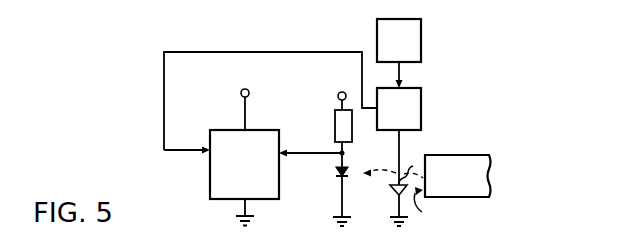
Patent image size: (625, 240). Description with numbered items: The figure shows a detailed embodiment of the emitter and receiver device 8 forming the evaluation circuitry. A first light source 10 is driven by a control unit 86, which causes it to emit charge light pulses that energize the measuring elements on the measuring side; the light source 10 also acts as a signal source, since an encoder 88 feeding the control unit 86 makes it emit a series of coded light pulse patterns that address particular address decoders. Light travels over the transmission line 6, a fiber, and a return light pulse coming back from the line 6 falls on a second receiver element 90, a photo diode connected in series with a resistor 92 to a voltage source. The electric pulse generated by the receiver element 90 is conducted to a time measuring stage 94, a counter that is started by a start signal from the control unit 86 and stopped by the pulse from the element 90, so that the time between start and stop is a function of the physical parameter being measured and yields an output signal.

The emitter and receiver device 8 is at (288, 89).
The time measuring stage 94 is at (217, 141).
The resistor 92 is at (335, 136).
The second receiver element 90 is at (346, 167).
The encoder 88 is at (415, 50).
The control unit 86 is at (412, 116).
The first light source 10 is at (392, 189).
The transmission line 6 is at (464, 162).